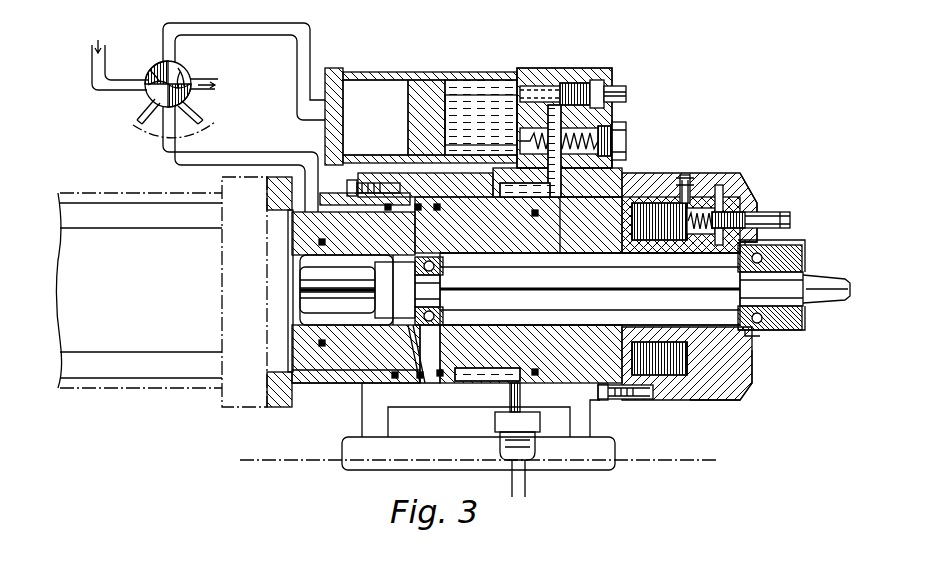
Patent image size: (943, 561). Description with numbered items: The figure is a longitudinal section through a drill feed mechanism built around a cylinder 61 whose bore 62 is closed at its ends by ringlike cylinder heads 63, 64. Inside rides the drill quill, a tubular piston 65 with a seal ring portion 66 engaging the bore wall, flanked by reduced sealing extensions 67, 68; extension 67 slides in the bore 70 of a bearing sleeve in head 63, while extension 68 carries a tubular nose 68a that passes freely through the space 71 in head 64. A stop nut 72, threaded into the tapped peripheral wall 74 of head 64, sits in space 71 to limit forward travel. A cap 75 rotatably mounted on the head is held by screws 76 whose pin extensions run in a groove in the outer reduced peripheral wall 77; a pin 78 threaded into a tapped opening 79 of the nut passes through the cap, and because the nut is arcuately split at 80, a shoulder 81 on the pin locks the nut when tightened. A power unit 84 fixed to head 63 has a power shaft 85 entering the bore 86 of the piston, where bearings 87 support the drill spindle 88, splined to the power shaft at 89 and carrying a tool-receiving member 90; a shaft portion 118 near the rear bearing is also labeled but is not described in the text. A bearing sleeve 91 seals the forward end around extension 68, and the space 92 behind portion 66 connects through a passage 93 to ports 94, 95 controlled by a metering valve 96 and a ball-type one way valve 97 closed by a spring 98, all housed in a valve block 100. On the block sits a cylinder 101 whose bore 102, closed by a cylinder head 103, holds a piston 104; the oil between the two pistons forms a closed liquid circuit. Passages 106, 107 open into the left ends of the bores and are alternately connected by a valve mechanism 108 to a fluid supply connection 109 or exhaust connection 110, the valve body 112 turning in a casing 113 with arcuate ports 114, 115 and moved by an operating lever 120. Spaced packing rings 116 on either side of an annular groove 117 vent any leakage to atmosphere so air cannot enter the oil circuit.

The cylinder 61 is at (608, 400).
The bore 62 is at (500, 420).
The cylinder head 63 is at (360, 390).
The cylinder head 64 is at (633, 174).
The tubular piston 65 is at (457, 275).
The seal ring portion 66 is at (455, 385).
The sealing extension 67 is at (362, 352).
The sealing extension 68 is at (527, 253).
The tubular nose 68a is at (778, 340).
The bore 70 is at (293, 345).
The space 71 is at (618, 212).
The stop nut 72 is at (745, 356).
The tapped peripheral wall 74 is at (725, 399).
The cap 75 is at (752, 195).
The screws 76 is at (678, 175).
The outer reduced peripheral wall 77 is at (738, 400).
The pin 78 is at (760, 218).
The tapped opening 79 is at (697, 238).
The arcuate split 80 is at (700, 206).
The shoulder 81 is at (720, 198).
The power unit 84 is at (127, 389).
The power shaft 85 is at (293, 266).
The bore 86 is at (293, 314).
The bearings 87 is at (443, 290).
The drill spindle 88 is at (621, 289).
The spline 89 is at (293, 288).
The member 90 is at (828, 286).
The bearing sleeve 91 is at (618, 170).
The space 92 is at (492, 227).
The passage 93 is at (561, 183).
The port 94 is at (512, 100).
The port 95 is at (512, 143).
The metering valve 96 is at (525, 72).
The one way valve 97 is at (505, 118).
The spring 98 is at (598, 128).
The valve block 100 is at (585, 70).
The cylinder 101 is at (360, 80).
The bore 102 is at (455, 82).
The cylinder head 103 is at (322, 68).
The piston 104 is at (413, 80).
The passage 106 is at (241, 132).
The passage 107 is at (239, 40).
The valve mechanism 108 is at (182, 68).
The fluid supply connection 109 is at (92, 67).
The exhaust connection 110 is at (200, 90).
The valve body 112 is at (157, 56).
The casing 113 is at (148, 78).
The arcuate port 114 is at (143, 98).
The arcuate port 115 is at (186, 80).
The packing rings 116 is at (420, 327).
The annular groove 117 is at (385, 195).
The shaft section 118 is at (468, 296).
The operating lever 120 is at (208, 121).